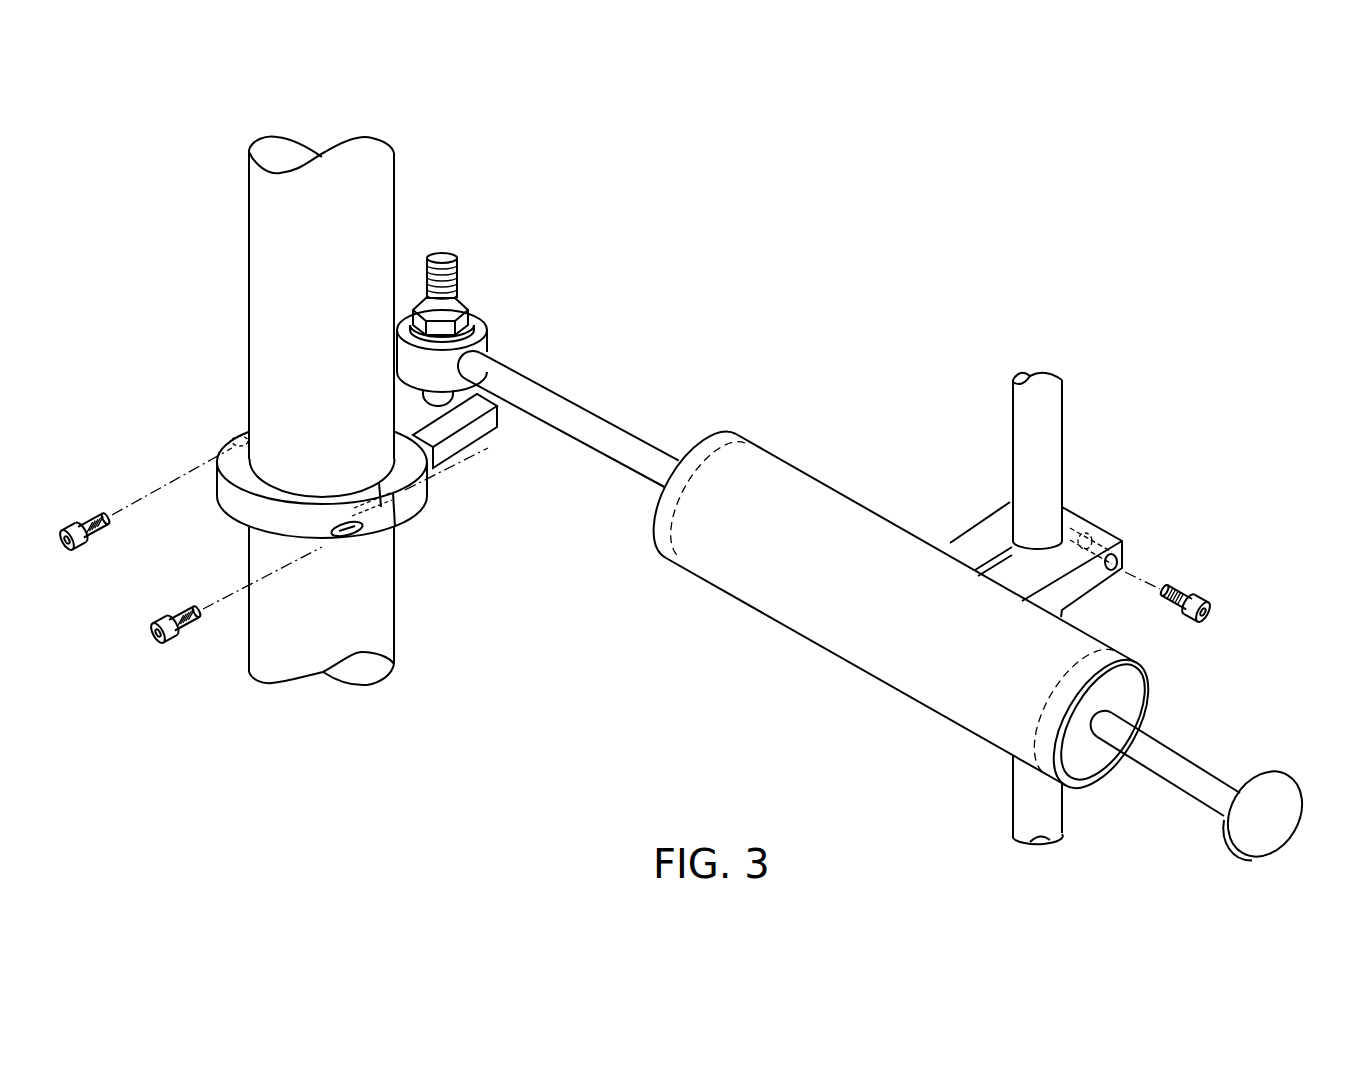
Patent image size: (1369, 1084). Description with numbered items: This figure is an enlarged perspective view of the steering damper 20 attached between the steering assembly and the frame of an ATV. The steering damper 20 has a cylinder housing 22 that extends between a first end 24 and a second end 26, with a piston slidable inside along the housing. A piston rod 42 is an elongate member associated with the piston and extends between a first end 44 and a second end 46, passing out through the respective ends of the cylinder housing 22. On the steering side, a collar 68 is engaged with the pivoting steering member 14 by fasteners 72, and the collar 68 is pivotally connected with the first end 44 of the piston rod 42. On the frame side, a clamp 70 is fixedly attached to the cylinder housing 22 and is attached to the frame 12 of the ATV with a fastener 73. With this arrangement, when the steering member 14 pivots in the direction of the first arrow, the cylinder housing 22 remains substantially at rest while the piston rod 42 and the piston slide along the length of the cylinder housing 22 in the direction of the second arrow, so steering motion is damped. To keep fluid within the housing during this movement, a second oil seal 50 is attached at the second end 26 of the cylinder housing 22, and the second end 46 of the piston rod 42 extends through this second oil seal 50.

The frame 12 is at (1064, 411).
The steering member 14 is at (249, 300).
The steering damper 20 is at (870, 485).
The cylinder housing 22 is at (857, 524).
The first end 24 is at (999, 620).
The second end 26 is at (1135, 651).
The piston rod 42 is at (603, 414).
The first end 44 is at (514, 332).
The second end 46 is at (1297, 767).
The second oil seal 50 is at (1096, 775).
The collar 68 is at (405, 523).
The clamp 70 is at (1098, 533).
The fasteners 72 is at (64, 531).
The fastener 73 is at (1205, 598).